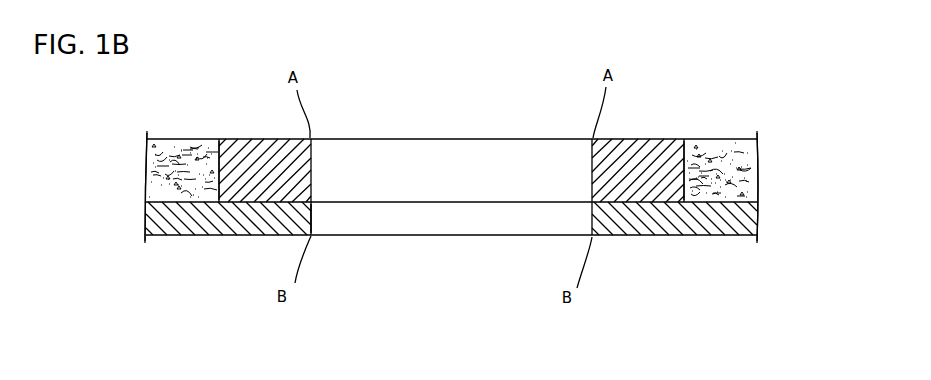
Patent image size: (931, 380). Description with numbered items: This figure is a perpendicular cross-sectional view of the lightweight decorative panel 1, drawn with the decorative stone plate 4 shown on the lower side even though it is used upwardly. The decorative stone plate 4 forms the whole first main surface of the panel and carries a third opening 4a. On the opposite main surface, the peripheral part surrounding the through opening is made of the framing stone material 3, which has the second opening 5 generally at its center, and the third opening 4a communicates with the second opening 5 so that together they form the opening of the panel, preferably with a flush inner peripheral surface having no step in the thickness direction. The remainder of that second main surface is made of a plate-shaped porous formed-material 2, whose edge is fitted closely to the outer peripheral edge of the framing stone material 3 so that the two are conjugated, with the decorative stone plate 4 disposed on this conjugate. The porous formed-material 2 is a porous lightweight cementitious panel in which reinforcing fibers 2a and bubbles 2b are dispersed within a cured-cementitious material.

The lightweight decorative panel 1 is at (653, 123).
The porous formed-material 2 is at (192, 150).
The reinforcing fiber 2a is at (210, 145).
The bubble 2b is at (157, 145).
The framing stone material 3 is at (250, 150).
The decorative stone plate 4 is at (230, 223).
The third opening 4a is at (312, 217).
The second opening 5 is at (311, 172).